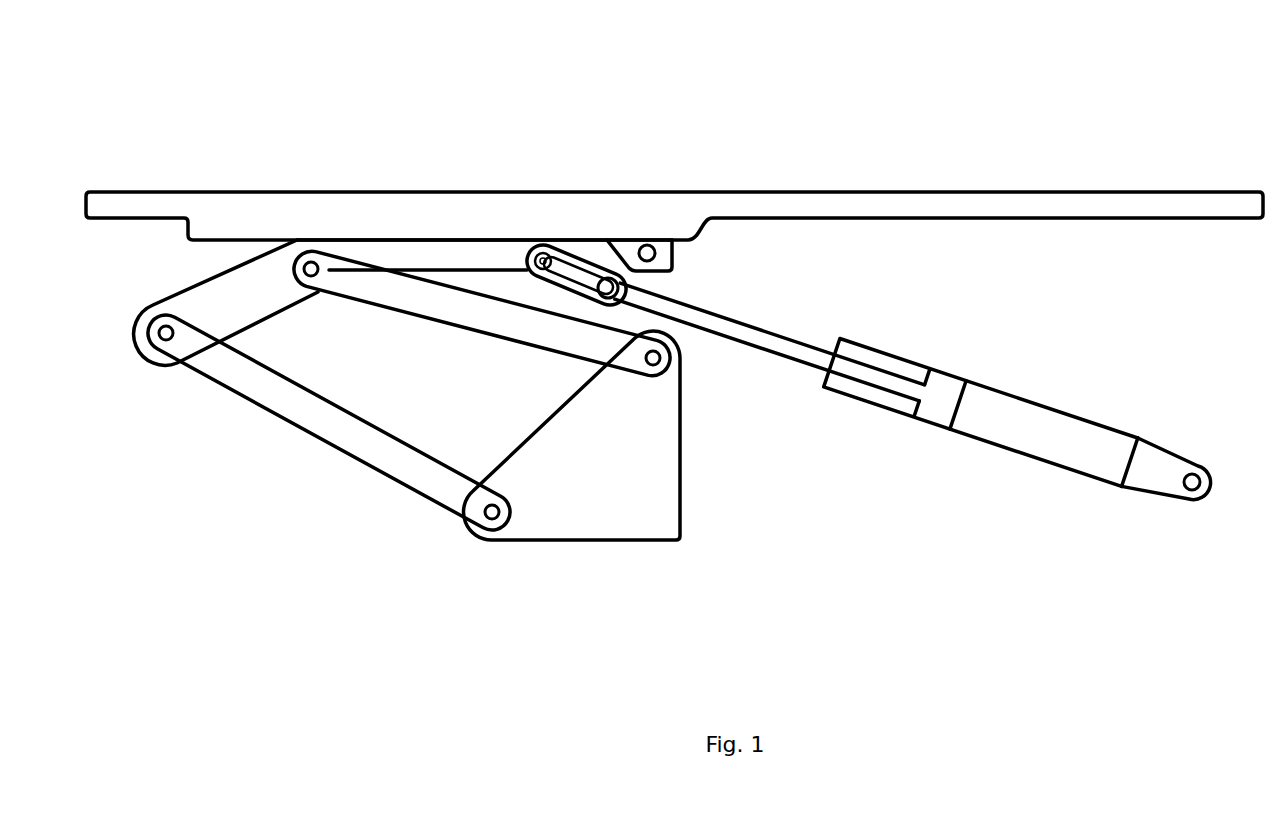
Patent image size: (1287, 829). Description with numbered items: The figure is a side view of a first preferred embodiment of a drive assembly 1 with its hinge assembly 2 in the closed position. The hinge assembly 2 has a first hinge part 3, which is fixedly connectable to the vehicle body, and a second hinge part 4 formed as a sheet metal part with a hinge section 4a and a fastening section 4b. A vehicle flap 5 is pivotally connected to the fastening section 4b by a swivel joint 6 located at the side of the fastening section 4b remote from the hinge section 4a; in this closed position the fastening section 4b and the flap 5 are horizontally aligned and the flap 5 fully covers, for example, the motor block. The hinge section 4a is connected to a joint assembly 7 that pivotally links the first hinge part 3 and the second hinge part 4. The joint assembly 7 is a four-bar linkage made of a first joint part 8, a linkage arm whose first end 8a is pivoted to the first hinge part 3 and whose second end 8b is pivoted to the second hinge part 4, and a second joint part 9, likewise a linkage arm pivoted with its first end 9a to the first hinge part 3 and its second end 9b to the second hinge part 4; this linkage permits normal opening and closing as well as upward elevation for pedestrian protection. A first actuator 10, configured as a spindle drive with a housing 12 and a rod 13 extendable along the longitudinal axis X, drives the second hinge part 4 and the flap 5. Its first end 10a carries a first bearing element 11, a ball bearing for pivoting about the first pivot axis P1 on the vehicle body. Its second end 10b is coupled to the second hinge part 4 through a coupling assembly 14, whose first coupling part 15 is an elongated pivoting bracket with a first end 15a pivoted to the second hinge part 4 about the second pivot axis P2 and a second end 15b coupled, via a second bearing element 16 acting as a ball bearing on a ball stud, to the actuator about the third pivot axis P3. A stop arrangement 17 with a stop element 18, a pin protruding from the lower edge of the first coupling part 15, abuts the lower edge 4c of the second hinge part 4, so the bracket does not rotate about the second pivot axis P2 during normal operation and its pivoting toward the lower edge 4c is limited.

The drive assembly 1 is at (839, 127).
The hinge assembly 2 is at (733, 501).
The first hinge part 3 is at (617, 518).
The second hinge part 4 is at (280, 262).
The hinge section 4a is at (203, 280).
The fastening section 4b is at (408, 250).
The lower edge 4c is at (575, 292).
The vehicle flap 5 is at (388, 202).
The swivel joint 6 is at (647, 253).
The joint assembly 7 is at (231, 450).
The first joint part 8 is at (438, 305).
The first end of first joint part 8a is at (640, 360).
The second end of first joint part 8b is at (323, 280).
The second joint part 9 is at (330, 432).
The first end of second joint part 9a is at (470, 515).
The second end of second joint part 9b is at (177, 347).
The first actuator 10 is at (998, 387).
The first end of first actuator 10a is at (1123, 440).
The second end of first actuator 10b is at (540, 290).
The first bearing element 11 is at (1167, 457).
The housing 12 is at (1010, 450).
The rod 13 is at (748, 342).
The coupling assembly 14 is at (588, 233).
The first coupling part 15 is at (600, 277).
The first end of first coupling part 15a is at (622, 266).
The second end of first coupling part 15b is at (545, 255).
The second bearing element 16 is at (535, 245).
The stop arrangement 17 is at (550, 303).
The stop element 18 is at (542, 312).
The first pivot axis P1 is at (1192, 482).
The second pivot axis P2 is at (632, 282).
The third pivot axis P3 is at (546, 255).
The longitudinal axis X is at (802, 424).